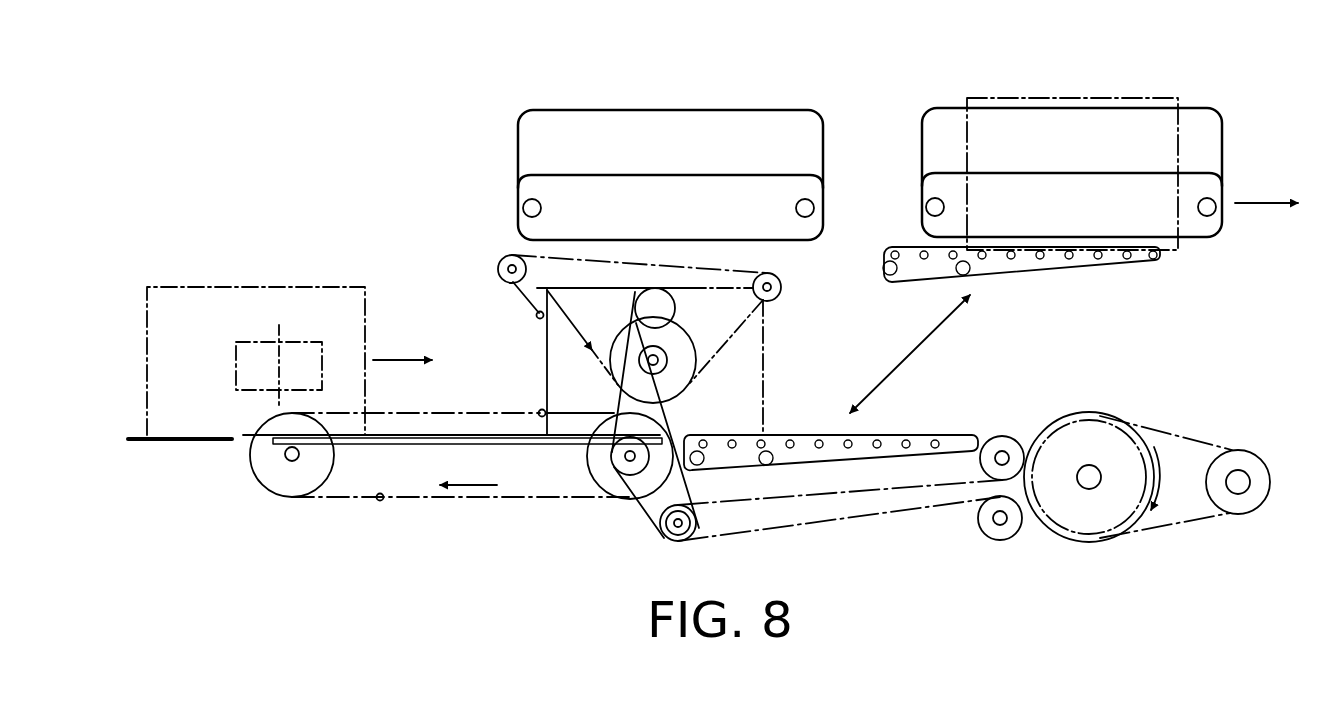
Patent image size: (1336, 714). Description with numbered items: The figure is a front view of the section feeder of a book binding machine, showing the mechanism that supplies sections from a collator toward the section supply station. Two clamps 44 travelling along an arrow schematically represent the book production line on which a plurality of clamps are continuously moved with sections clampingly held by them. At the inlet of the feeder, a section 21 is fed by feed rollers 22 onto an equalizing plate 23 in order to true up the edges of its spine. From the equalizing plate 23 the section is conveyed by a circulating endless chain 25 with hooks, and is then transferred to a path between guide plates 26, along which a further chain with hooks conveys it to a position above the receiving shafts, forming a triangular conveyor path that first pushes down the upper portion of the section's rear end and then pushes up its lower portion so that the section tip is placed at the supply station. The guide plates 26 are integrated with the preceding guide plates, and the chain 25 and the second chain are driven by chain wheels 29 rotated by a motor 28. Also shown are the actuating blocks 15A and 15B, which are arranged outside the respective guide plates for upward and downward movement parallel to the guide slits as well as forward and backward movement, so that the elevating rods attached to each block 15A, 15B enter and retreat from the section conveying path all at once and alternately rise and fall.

The actuating block 15A is at (925, 433).
The actuating block 15B is at (1080, 272).
The section 21 is at (1113, 98).
The feed rollers 22 is at (311, 342).
The equalizing plate 23 is at (367, 446).
The circulating endless chain 25 is at (517, 498).
The guide plates 26 is at (515, 286).
The motor 28 is at (1243, 493).
The chain wheels 29 is at (1099, 516).
The clamps 44 is at (683, 122).